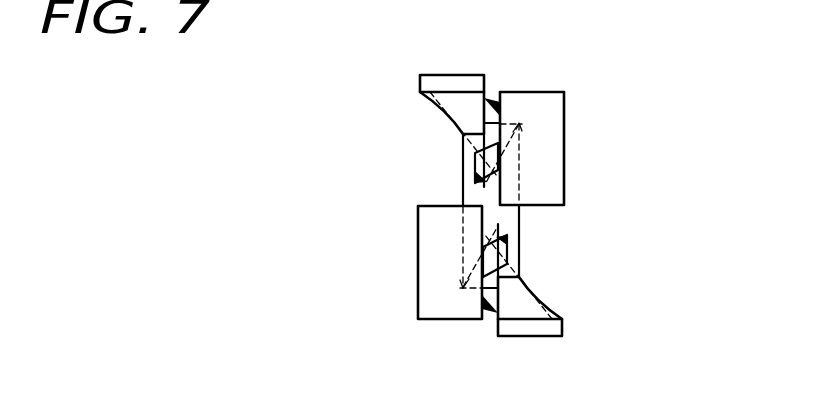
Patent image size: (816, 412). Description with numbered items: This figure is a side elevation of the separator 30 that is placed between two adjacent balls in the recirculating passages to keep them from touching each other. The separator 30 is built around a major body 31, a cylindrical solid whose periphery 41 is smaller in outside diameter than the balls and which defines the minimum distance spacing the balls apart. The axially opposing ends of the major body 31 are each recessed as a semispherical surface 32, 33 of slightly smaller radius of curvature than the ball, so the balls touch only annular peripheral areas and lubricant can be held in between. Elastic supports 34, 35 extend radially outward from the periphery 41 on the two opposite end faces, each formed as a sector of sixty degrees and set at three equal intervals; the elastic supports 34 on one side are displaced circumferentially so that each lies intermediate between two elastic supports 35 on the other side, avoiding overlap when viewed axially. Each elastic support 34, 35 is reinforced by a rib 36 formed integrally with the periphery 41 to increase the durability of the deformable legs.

The separator 30 is at (556, 80).
The major body 31 is at (528, 213).
The semispherical surface 32 is at (520, 227).
The semispherical surface 33 is at (482, 194).
The elastic support 34 is at (553, 125).
The elastic support 35 is at (452, 82).
The rib 36 is at (490, 103).
The periphery 41 is at (467, 177).